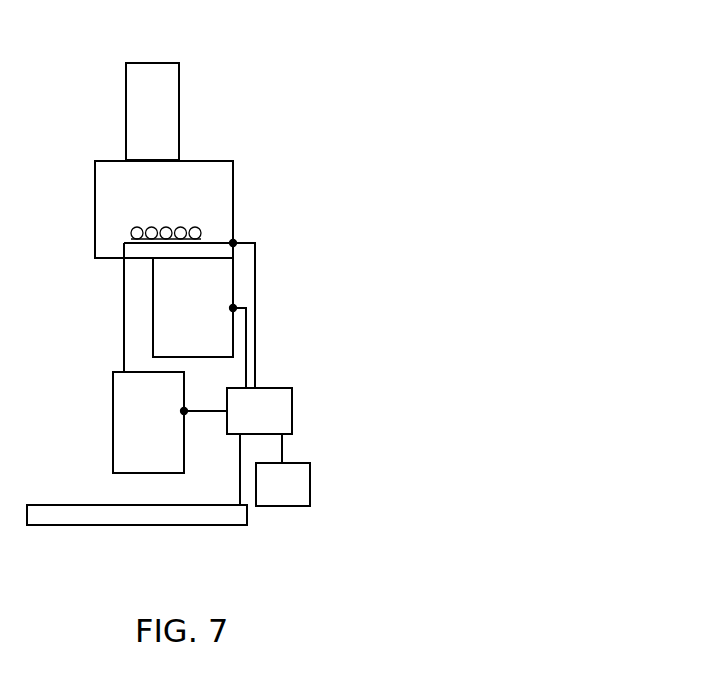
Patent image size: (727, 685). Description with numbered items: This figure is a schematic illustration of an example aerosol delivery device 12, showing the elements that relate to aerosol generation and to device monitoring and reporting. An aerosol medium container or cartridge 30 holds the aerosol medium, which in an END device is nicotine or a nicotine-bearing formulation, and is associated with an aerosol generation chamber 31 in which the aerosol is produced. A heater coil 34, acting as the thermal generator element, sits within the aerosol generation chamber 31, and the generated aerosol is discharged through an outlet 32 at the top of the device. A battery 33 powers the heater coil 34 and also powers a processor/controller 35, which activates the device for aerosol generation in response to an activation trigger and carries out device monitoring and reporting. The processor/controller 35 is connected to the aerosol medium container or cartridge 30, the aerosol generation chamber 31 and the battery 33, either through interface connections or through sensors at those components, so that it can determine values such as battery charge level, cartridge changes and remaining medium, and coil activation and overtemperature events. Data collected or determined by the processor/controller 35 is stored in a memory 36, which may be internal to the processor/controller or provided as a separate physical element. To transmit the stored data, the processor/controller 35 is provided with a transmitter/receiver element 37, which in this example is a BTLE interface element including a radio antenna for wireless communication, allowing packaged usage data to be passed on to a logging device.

The aerosol delivery device 12 is at (338, 93).
The aerosol medium container or cartridge 30 is at (213, 291).
The aerosol generation chamber 31 is at (234, 198).
The outlet 32 is at (180, 118).
The battery 33 is at (113, 428).
The heater coil 34 is at (135, 227).
The processor/controller 35 is at (293, 412).
The memory 36 is at (311, 485).
The transmitter/receiver element 37 is at (180, 526).